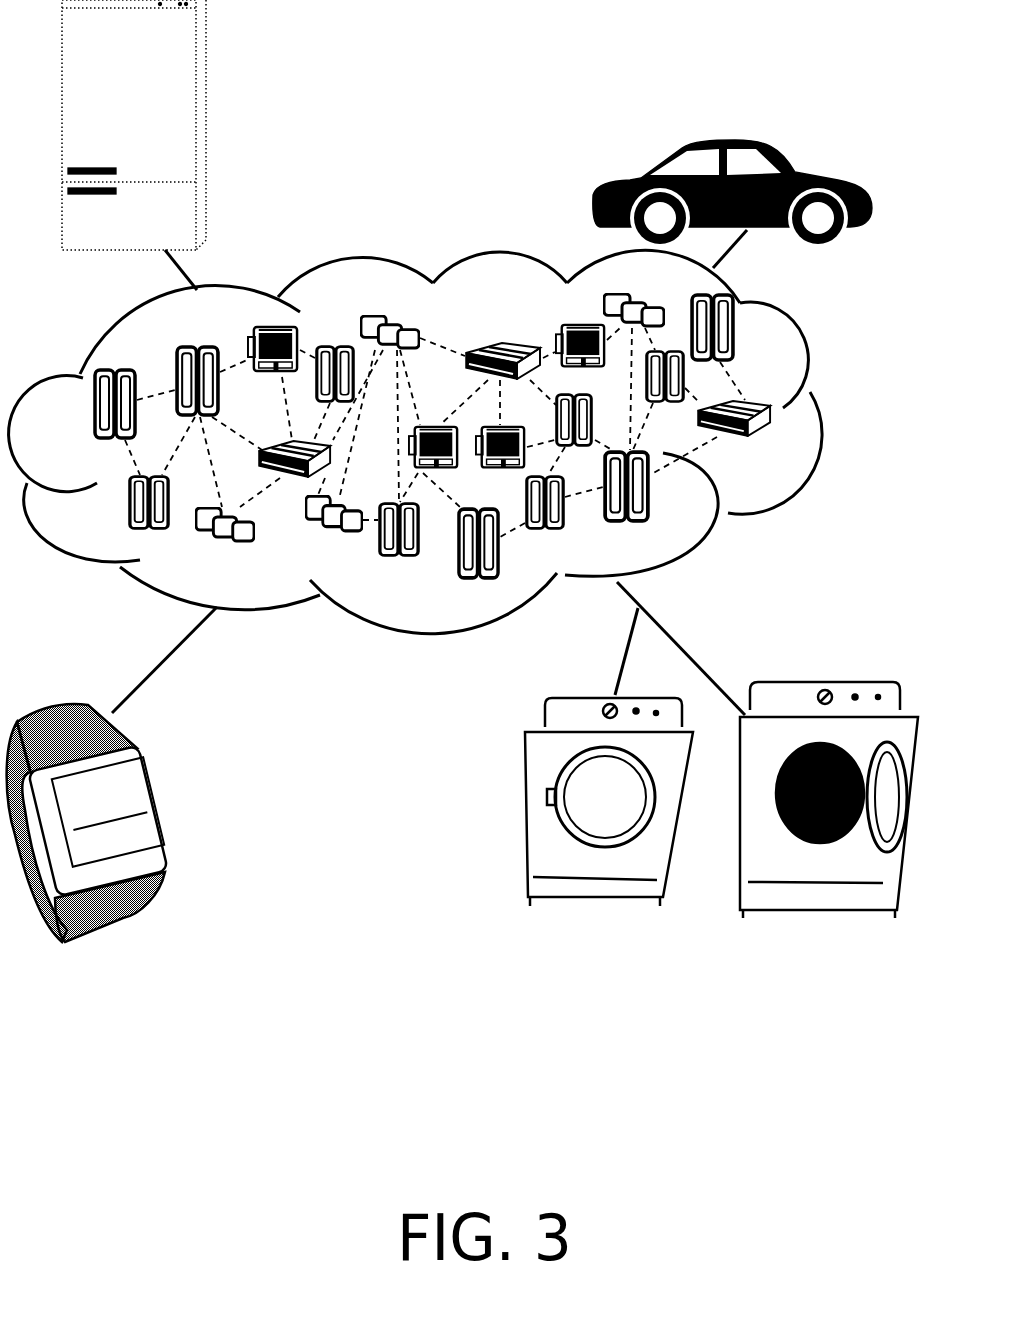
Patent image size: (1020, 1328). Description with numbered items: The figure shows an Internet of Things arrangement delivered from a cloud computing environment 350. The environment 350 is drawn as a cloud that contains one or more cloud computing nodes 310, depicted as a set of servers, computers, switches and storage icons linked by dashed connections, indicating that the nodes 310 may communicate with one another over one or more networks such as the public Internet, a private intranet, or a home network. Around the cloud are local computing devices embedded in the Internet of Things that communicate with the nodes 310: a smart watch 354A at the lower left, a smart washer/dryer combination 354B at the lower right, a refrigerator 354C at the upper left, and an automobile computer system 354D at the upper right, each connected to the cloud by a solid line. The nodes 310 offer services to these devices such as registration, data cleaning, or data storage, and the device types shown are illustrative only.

The smart watch 354A is at (160, 805).
The smart washer/dryer combination 354B is at (678, 703).
The refrigerator 354C is at (767, 152).
The refrigerator 354D is at (205, 113).
The cloud computing environment 350 is at (833, 413).
The cloud computing nodes 310 is at (499, 436).